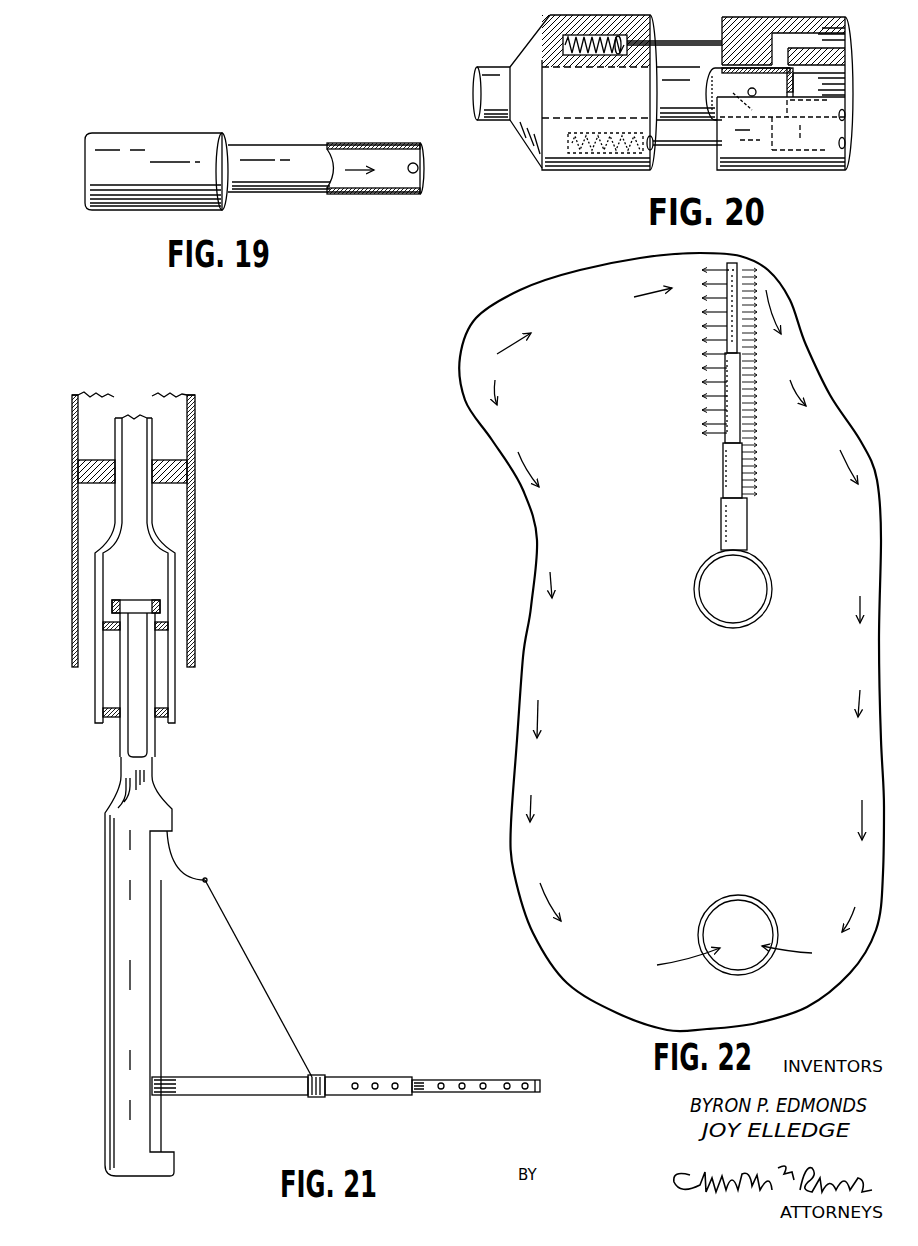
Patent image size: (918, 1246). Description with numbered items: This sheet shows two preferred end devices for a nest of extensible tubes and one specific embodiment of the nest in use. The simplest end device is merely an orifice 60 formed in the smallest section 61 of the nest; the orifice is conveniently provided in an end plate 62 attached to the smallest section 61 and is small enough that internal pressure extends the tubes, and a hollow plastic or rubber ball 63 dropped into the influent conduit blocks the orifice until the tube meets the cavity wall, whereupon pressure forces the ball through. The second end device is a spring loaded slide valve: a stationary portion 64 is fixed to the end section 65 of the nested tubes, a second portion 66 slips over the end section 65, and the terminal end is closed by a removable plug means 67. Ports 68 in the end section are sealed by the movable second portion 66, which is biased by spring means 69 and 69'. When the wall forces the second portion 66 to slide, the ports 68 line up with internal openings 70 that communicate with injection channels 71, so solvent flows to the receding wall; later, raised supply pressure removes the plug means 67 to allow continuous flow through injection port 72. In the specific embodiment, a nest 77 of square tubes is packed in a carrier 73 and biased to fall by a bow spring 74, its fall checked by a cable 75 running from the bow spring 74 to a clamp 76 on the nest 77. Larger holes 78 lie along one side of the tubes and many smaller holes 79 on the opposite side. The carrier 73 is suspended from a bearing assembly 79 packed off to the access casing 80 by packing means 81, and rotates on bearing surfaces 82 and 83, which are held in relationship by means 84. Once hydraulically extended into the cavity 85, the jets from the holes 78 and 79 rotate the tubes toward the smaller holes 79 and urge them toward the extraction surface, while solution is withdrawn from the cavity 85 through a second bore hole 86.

In FIG. 19, the orifice 60 is at (419, 170).
In FIG. 19, the smallest section 61 is at (305, 140).
In FIG. 19, the end plate 62 is at (421, 142).
In FIG. 19, the ball 63 is at (410, 174).
In FIG. 20, the stationary portion 64 is at (540, 130).
In FIG. 20, the end section 65 is at (650, 64).
In FIG. 20, the second portion 66 is at (830, 168).
In FIG. 20, the plug means 67 is at (795, 85).
In FIG. 20, the ports 68 is at (748, 92).
In FIG. 20, the spring means 69 is at (604, 41).
In FIG. 20, the spring means 69' is at (645, 169).
In FIG. 20, the internal openings 70 is at (775, 56).
In FIG. 20, the injection channels 71 is at (830, 40).
In FIG. 20, the injection port 72 is at (840, 78).
In FIG. 21, the carrier 73 is at (105, 962).
In FIG. 21, the bow spring 74 is at (178, 858).
In FIG. 21, the cable 75 is at (270, 963).
In FIG. 21, the clamp 76 is at (313, 1098).
In FIG. 21, the nest 77 is at (248, 1076).
In FIG. 21, the holes 78 is at (482, 1080).
In FIG. 22, the holes 78 is at (725, 420).
In FIG. 21, the bearing assembly 79 is at (176, 690).
In FIG. 22, the bearing assembly 79 is at (744, 482).
In FIG. 21, the access casing 80 is at (195, 513).
In FIG. 22, the access casing 80 is at (697, 602).
In FIG. 21, the packing means 81 is at (176, 461).
In FIG. 21, the bearing surface 82 is at (162, 620).
In FIG. 21, the bearing surface 83 is at (162, 614).
In FIG. 21, the means 84 is at (110, 716).
In FIG. 22, the cavity 85 is at (717, 758).
In FIG. 22, the second bore hole 86 is at (720, 905).